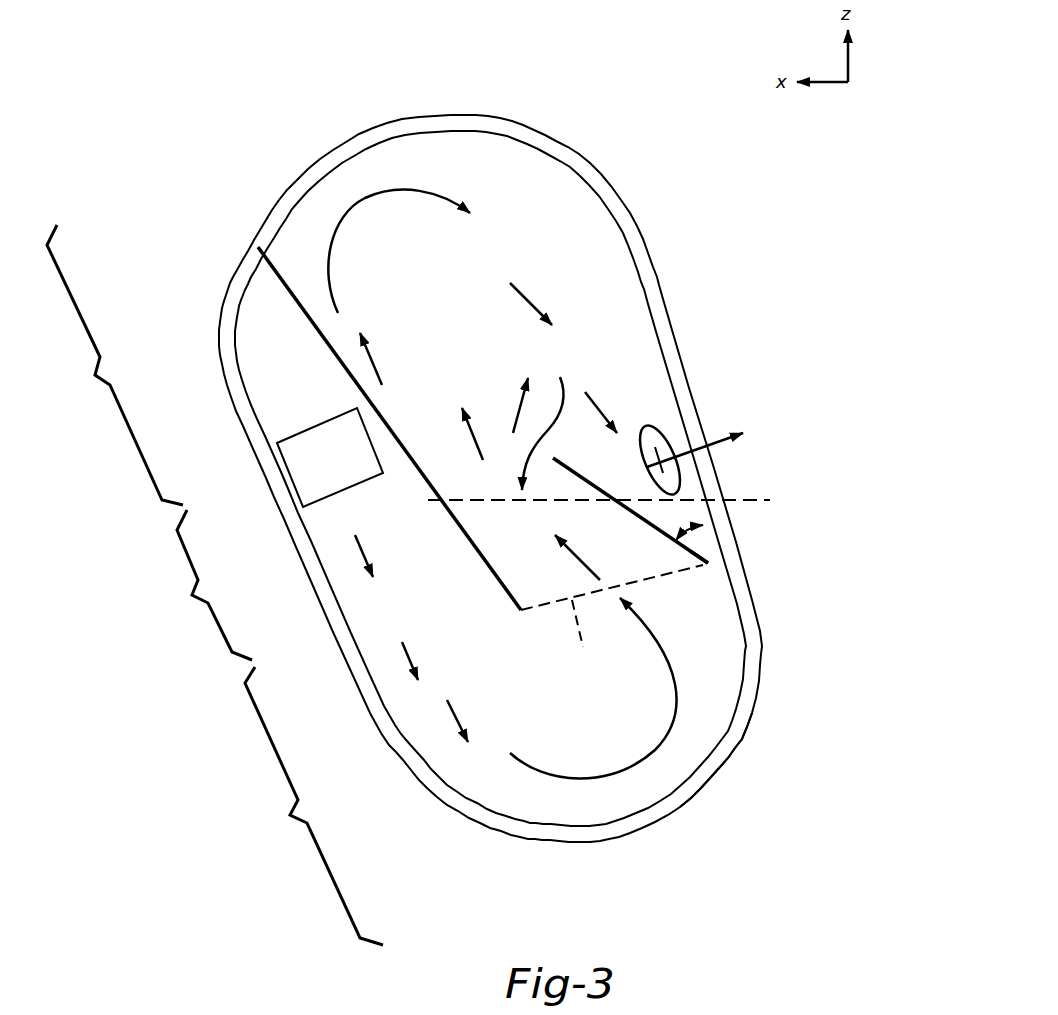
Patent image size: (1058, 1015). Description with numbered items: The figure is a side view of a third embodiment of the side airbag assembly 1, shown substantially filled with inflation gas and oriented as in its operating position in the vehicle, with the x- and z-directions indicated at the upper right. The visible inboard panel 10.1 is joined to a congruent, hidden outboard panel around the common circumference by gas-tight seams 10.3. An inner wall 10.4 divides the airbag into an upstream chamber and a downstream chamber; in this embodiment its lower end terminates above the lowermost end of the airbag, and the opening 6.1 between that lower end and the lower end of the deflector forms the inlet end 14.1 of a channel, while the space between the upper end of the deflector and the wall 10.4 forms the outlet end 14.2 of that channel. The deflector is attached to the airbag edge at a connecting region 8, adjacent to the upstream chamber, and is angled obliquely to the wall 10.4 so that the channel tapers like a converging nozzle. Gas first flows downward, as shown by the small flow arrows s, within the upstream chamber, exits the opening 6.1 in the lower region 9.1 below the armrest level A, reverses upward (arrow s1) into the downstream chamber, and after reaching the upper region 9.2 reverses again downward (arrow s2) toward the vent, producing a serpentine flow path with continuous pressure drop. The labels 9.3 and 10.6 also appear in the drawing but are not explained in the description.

The side airbag assembly 1 is at (664, 179).
The connecting region 8 is at (706, 563).
The lower region 9.1 is at (314, 806).
The upper region 9.2 is at (115, 365).
The third section 9.3 is at (202, 585).
The inboard panel 10.1 is at (493, 153).
The seams 10.3 is at (693, 773).
The inner wall 10.4 is at (288, 292).
The deflecting wall 10.6 is at (652, 532).
The inlet end 14.1 is at (612, 620).
The outlet end 14.2 is at (549, 420).
The opening 6.1 is at (612, 620).
The dashed line (armrest level) A is at (610, 500).
The flow direction s is at (486, 512).
The counter-clockwise curved arrow s1 is at (653, 757).
The clockwise curved arrow s2 is at (357, 197).